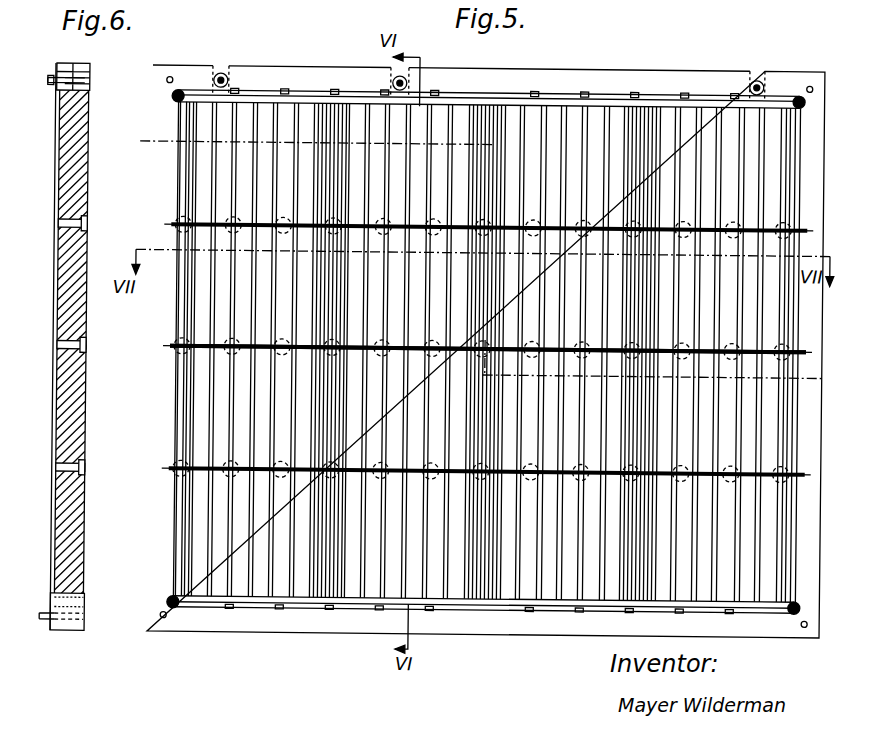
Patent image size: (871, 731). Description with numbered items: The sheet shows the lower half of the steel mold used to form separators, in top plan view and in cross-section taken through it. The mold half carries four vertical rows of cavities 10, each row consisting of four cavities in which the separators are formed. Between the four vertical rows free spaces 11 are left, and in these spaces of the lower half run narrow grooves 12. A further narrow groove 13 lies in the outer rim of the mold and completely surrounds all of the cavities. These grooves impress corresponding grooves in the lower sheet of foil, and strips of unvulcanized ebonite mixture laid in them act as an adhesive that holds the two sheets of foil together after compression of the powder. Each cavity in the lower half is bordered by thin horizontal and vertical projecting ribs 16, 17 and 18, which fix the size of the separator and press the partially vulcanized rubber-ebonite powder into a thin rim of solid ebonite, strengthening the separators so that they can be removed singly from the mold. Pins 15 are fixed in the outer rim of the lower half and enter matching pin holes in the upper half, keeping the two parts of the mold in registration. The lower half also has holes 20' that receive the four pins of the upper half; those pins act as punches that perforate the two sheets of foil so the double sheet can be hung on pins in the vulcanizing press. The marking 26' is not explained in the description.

In FIG. 5, the vertical row of cavities 10 is at (486, 351).
In FIG. 5, the free space 11 is at (335, 203).
In FIG. 5, the narrow groove 12 is at (330, 177).
In FIG. 5, the narrow groove in outer rim 13 is at (245, 99).
In FIG. 6, the registration pin 15 is at (50, 82).
In FIG. 5, the registration pin 15 is at (165, 80).
In FIG. 5, the projecting rib 16 is at (262, 347).
In FIG. 5, the projecting rib 17 is at (187, 322).
In FIG. 5, the projecting rib 18 is at (316, 290).
In FIG. 5, the hole 20' is at (670, 69).
In FIG. 5, the bolt 26' is at (228, 65).